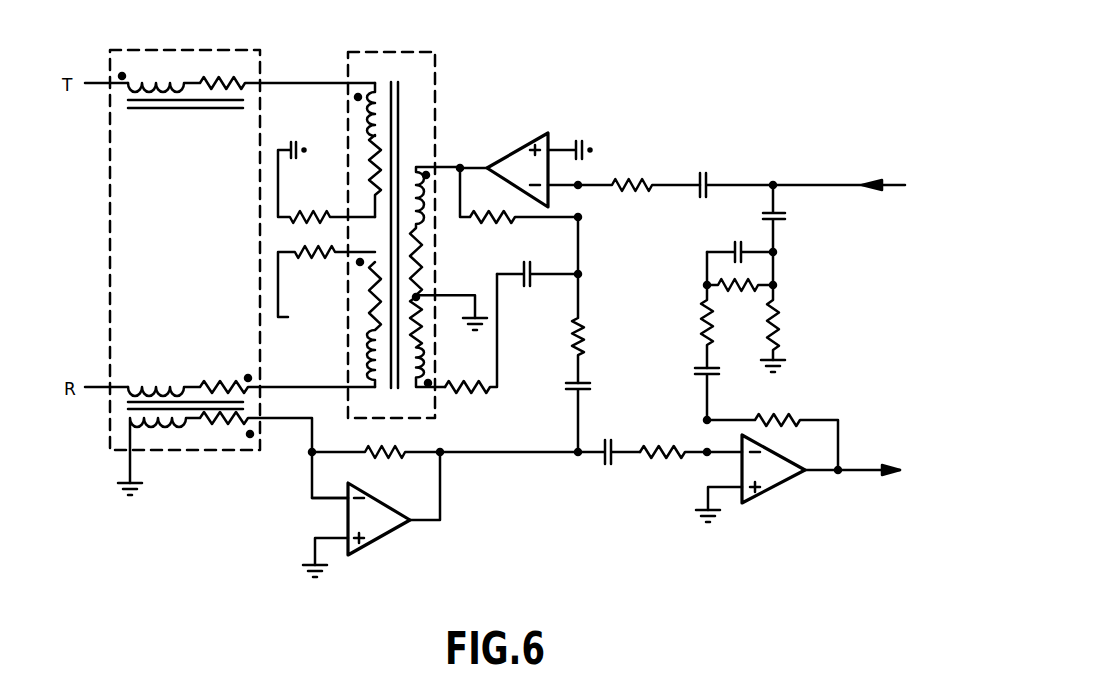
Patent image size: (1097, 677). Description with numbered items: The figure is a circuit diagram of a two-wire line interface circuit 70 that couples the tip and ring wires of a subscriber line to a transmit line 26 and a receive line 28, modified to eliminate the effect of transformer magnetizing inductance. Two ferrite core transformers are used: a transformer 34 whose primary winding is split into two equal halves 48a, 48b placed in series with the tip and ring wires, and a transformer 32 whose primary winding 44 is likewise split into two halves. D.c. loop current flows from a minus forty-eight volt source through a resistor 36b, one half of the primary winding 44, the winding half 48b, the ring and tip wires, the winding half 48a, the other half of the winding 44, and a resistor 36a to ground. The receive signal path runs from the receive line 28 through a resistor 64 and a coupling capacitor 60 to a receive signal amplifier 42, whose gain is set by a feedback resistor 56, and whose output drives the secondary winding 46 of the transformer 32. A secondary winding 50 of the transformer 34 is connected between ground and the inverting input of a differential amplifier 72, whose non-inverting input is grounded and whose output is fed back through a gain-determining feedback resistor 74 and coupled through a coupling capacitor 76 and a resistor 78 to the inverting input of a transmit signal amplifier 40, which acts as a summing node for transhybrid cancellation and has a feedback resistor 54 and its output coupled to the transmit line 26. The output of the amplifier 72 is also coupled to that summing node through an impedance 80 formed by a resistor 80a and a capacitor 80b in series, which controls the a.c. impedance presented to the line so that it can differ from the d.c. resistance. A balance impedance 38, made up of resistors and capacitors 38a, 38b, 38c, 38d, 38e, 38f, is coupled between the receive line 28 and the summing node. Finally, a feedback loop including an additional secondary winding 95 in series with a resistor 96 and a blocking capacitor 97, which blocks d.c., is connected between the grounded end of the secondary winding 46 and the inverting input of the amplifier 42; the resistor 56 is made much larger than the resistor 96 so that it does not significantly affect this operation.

The transmit line 26 is at (864, 469).
The receive line 28 is at (793, 182).
The transformer 32 is at (375, 52).
The transformer 34 is at (172, 50).
The resistor 36a is at (311, 213).
The resistor 36b is at (310, 258).
The balance impedance 38 is at (770, 302).
The resistor 38a is at (785, 318).
The capacitor 38b is at (792, 216).
The capacitor 38c is at (740, 240).
The resistor 38d is at (737, 294).
The resistor 38e is at (703, 331).
The capacitor 38f is at (698, 373).
The transmit signal amplifier 40 is at (766, 503).
The receive signal amplifier 42 is at (512, 152).
The primary winding 44 is at (358, 119).
The secondary winding 46 is at (425, 213).
The winding half 48a is at (135, 110).
The winding half 48b is at (152, 378).
The secondary winding 50 is at (173, 437).
The feedback resistor 54 is at (776, 418).
The feedback resistor 56 is at (503, 228).
The coupling capacitor 60 is at (707, 172).
The resistor 64 is at (642, 172).
The line interface circuit 70 is at (578, 107).
The differential amplifier 72 is at (385, 535).
The feedback resistor 74 is at (381, 460).
The coupling capacitor 76 is at (612, 468).
The resistor 78 is at (662, 463).
The impedance 80 is at (579, 364).
The resistor 80a is at (586, 338).
The capacitor 80b is at (607, 415).
The additional secondary winding 95 is at (420, 368).
The resistor 96 is at (490, 392).
The blocking capacitor 97 is at (580, 271).